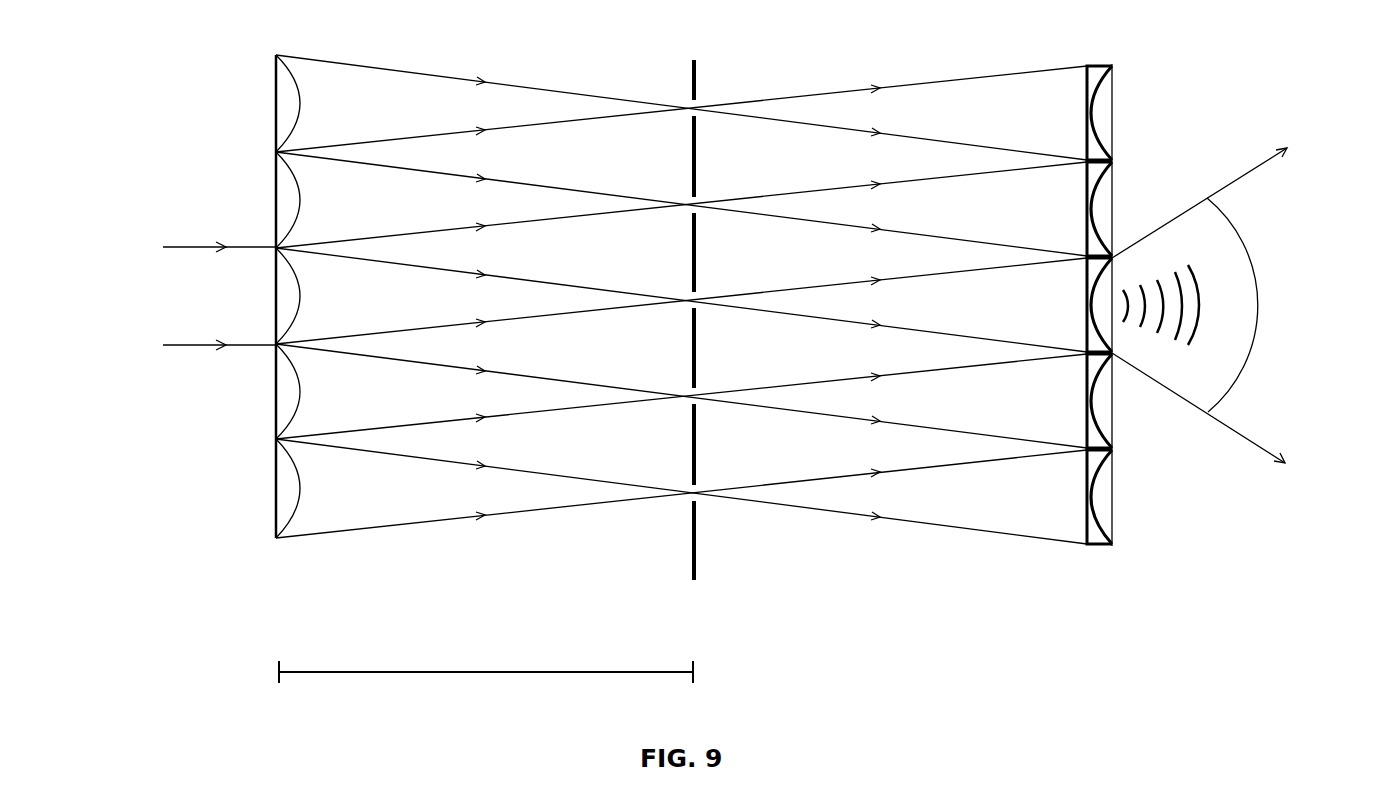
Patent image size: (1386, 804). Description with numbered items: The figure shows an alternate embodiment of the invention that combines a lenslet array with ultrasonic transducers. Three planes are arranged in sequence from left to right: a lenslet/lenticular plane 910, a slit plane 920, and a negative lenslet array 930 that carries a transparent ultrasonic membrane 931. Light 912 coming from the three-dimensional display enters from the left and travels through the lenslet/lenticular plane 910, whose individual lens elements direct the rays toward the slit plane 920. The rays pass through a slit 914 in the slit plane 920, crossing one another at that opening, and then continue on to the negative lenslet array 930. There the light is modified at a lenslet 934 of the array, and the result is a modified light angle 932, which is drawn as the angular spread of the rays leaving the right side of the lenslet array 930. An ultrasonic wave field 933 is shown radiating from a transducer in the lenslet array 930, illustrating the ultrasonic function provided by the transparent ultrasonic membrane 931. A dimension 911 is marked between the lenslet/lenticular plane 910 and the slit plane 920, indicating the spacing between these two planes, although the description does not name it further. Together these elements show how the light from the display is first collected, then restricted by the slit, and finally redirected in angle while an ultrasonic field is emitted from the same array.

The lenslet/lenticular plane 910 is at (290, 557).
The focal length distance 911 is at (437, 682).
The light 912 is at (210, 331).
The slit 914 is at (705, 292).
The slit plane 920 is at (697, 597).
The negative lenslet array 930 is at (1126, 370).
The transparent ultrasonic membrane 931 is at (1124, 502).
The modified light angle 932 is at (1336, 220).
The ultrasonic wave field 933 is at (1172, 268).
The lenslet 934 is at (1092, 270).